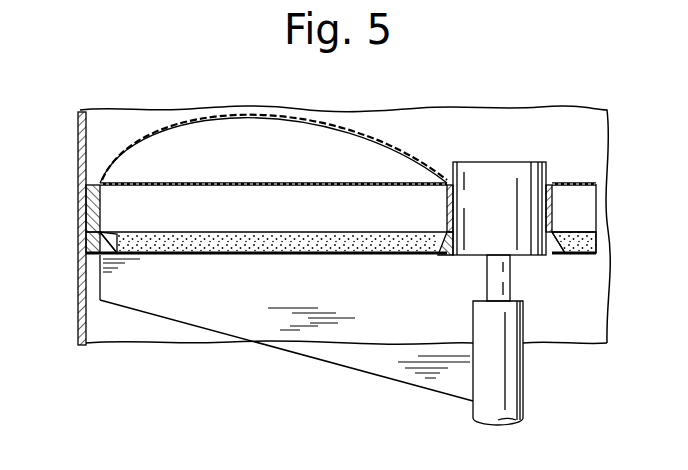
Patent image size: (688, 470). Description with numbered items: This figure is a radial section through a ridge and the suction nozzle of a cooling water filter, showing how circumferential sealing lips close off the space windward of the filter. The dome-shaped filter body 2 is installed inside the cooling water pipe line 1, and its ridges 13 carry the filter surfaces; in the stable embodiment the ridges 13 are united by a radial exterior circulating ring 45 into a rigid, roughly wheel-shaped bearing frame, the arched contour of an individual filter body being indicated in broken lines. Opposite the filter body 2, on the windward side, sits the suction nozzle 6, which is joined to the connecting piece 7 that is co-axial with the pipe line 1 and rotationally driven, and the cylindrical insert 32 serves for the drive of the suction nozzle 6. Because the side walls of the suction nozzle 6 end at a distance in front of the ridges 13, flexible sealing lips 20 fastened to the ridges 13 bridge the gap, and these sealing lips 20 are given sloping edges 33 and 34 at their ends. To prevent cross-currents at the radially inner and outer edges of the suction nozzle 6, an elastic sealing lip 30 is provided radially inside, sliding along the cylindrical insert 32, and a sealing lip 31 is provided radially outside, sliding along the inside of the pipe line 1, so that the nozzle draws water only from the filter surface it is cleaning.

The pipe line 1 is at (78, 152).
The filter body 2 is at (240, 183).
The suction nozzle 6 is at (318, 348).
The connecting piece 7 is at (512, 392).
The ridge 13 is at (96, 207).
The sealing lip 20 is at (232, 240).
The elastic sealing lip 30 is at (447, 262).
The sealing lip 31 is at (80, 266).
The cylindrical insert 32 is at (500, 168).
The sloping edge 33 is at (438, 248).
The sloping edge 34 is at (112, 250).
The circulating ring 45 is at (332, 120).